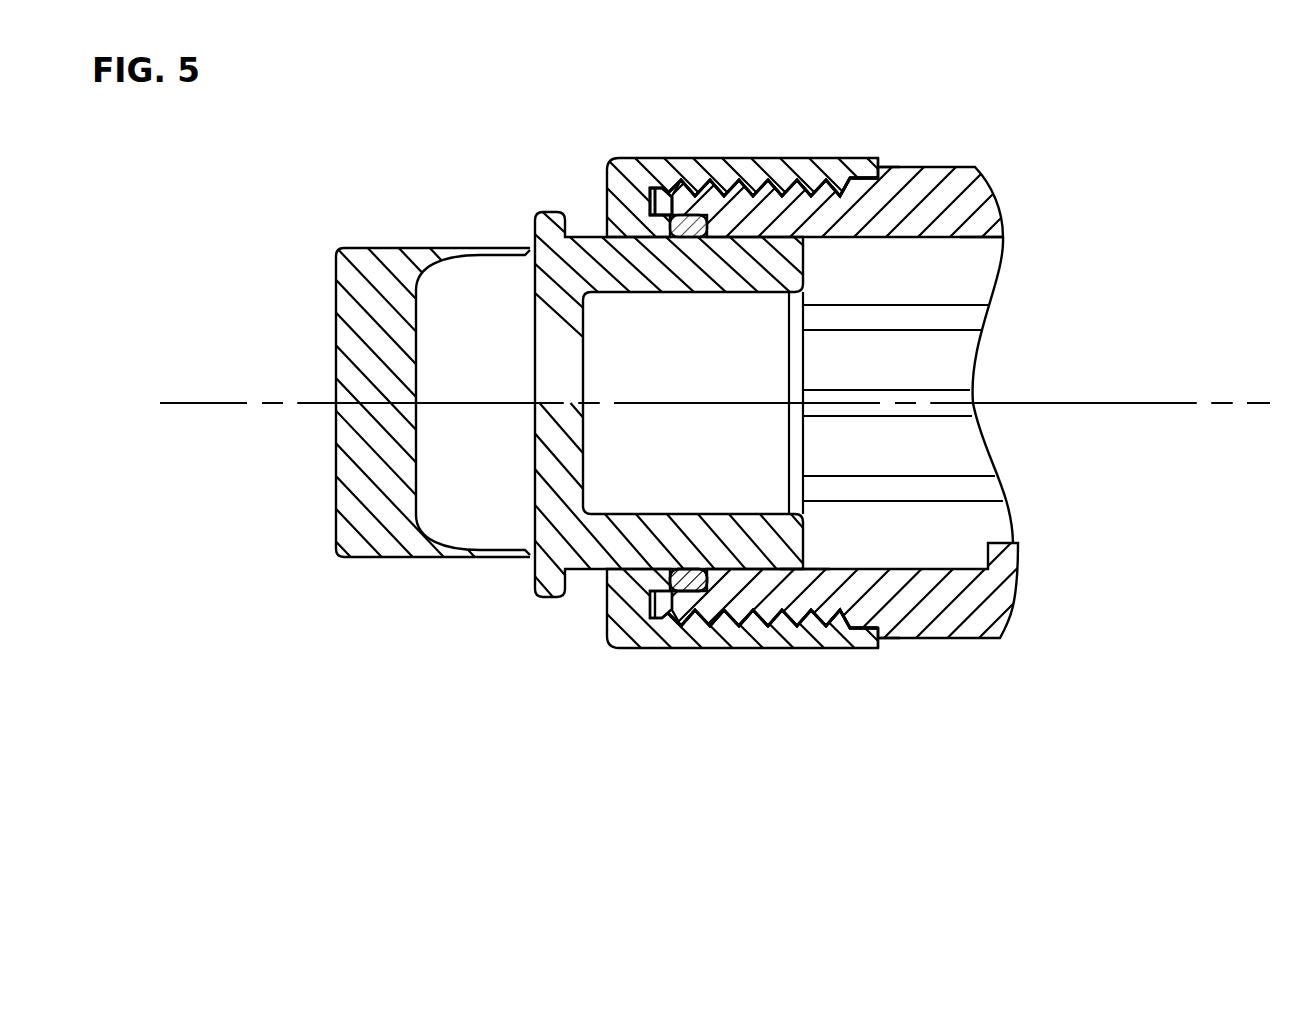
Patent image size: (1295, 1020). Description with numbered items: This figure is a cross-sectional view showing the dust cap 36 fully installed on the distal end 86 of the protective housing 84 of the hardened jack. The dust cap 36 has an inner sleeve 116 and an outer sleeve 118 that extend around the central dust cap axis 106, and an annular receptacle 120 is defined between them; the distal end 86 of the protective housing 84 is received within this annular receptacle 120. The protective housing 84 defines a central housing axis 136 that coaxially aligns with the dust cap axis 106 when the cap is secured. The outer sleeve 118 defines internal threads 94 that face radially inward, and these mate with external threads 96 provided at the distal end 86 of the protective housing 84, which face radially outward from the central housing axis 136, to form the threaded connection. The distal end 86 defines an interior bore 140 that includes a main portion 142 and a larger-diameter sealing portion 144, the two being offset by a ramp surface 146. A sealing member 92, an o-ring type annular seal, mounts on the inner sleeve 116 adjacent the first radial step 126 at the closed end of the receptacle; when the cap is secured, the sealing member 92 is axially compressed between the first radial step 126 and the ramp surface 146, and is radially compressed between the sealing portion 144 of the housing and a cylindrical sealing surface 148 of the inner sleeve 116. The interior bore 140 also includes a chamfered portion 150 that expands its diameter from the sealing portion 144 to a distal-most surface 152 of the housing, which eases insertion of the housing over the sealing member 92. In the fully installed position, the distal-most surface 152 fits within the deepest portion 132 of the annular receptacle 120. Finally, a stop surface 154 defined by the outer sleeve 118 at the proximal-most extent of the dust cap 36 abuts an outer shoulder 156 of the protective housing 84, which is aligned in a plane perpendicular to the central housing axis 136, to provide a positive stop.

The dust cap 36 is at (352, 568).
The protective housing 84 is at (960, 166).
The distal end 86 is at (674, 203).
The sealing member 92 is at (673, 227).
The internal threads 94 is at (727, 185).
The external threads 96 is at (766, 185).
The central dust cap axis 106 is at (207, 403).
The inner sleeve 116 is at (693, 527).
The outer sleeve 118 is at (822, 158).
The annular receptacle 120 is at (795, 571).
The first radial step 126 is at (675, 580).
The deepest portion 132 is at (653, 192).
The central housing axis 136 is at (1158, 403).
The interior bore 140 is at (976, 295).
The main portion 142 is at (988, 237).
The sealing portion 144 is at (675, 622).
The ramp surface 146 is at (690, 592).
The cylindrical sealing surface 148 is at (683, 568).
The chamfered portion 150 is at (650, 205).
The distal-most surface 152 is at (660, 600).
The stop surface 154 is at (879, 165).
The outer shoulder 156 is at (880, 632).